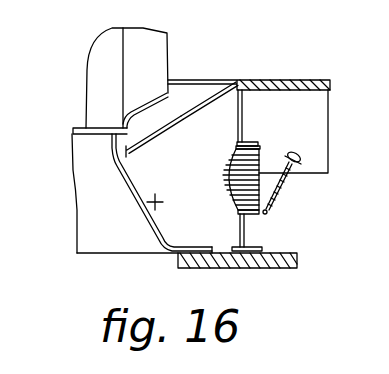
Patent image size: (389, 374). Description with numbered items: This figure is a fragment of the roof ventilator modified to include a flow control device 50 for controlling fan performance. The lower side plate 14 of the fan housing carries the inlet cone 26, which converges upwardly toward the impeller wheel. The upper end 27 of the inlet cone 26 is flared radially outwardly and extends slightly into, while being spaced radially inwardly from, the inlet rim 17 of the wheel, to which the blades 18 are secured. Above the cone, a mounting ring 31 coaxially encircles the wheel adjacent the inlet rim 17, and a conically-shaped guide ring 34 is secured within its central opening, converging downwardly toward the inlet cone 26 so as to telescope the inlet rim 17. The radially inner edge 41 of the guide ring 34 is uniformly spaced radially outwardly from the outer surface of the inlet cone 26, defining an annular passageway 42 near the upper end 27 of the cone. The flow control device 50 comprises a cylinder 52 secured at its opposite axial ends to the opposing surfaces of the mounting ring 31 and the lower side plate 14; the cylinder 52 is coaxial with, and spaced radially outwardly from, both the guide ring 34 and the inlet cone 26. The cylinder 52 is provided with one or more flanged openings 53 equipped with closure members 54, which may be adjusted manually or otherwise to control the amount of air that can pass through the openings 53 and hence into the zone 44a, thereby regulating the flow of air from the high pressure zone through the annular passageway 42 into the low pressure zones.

The lower side plate 14 is at (298, 258).
The inlet rim 17 is at (143, 105).
The blades 18 is at (152, 53).
The inlet cone 26 is at (143, 215).
The upper end of the inlet cone 27 is at (73, 133).
The mounting ring 31 is at (310, 79).
The guide ring 34 is at (196, 109).
The radially inner edge 41 is at (151, 137).
The annular passageway 42 is at (119, 168).
The zone 44a is at (168, 210).
The flow control device 50 is at (300, 189).
The cylinder 52 is at (243, 117).
The flanged openings 53 is at (257, 141).
The closure members 54 is at (268, 206).